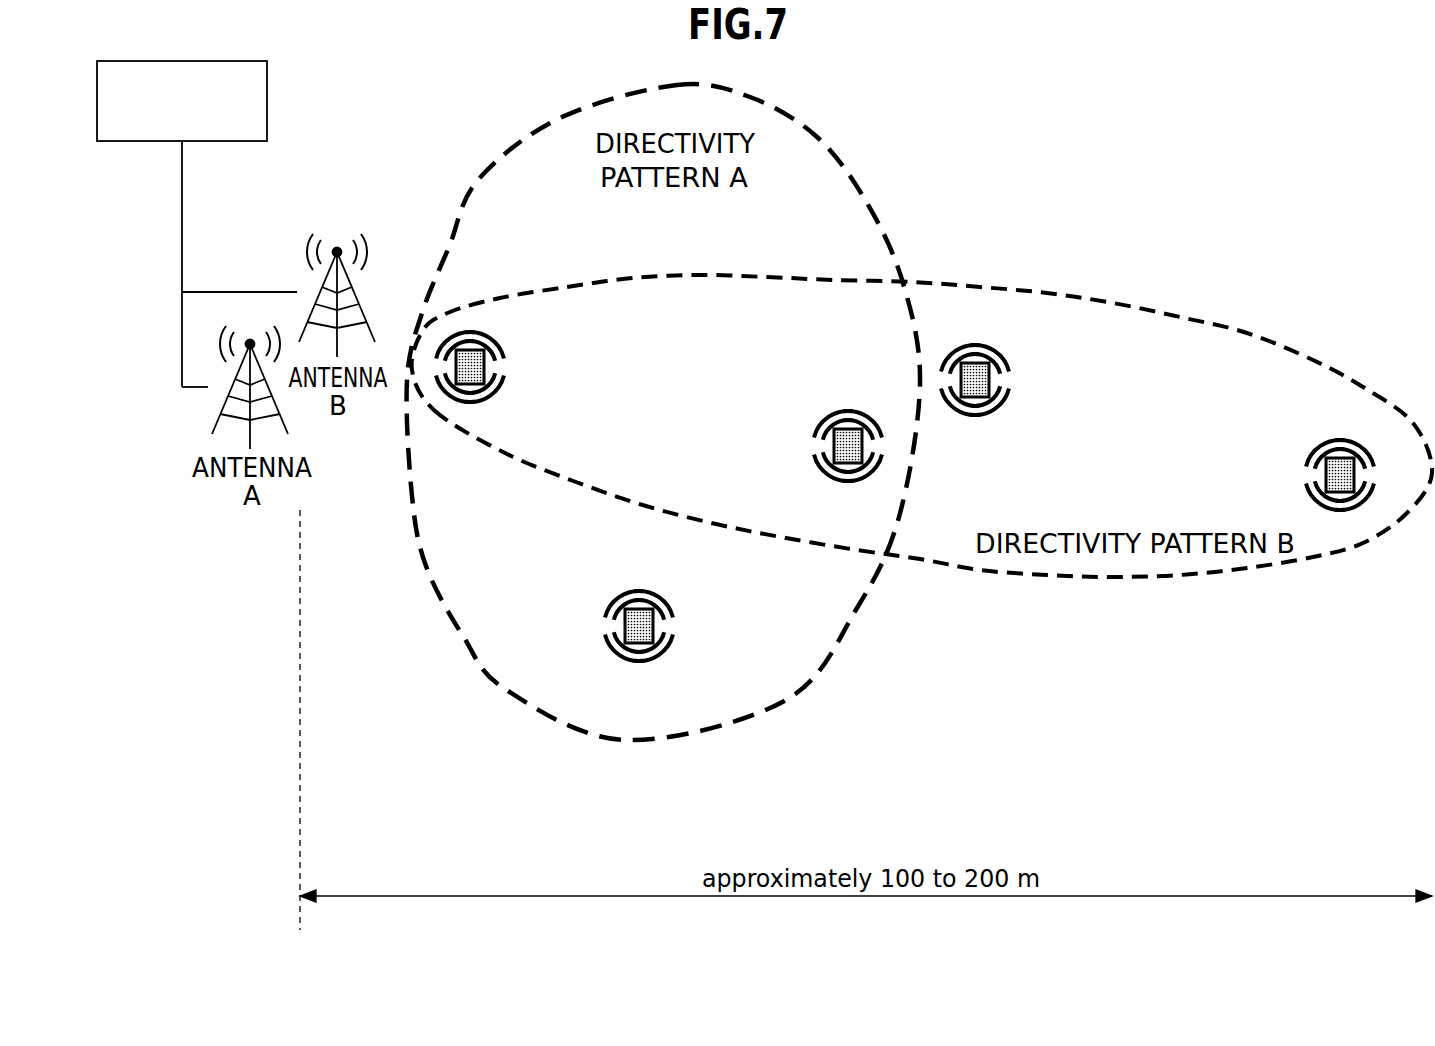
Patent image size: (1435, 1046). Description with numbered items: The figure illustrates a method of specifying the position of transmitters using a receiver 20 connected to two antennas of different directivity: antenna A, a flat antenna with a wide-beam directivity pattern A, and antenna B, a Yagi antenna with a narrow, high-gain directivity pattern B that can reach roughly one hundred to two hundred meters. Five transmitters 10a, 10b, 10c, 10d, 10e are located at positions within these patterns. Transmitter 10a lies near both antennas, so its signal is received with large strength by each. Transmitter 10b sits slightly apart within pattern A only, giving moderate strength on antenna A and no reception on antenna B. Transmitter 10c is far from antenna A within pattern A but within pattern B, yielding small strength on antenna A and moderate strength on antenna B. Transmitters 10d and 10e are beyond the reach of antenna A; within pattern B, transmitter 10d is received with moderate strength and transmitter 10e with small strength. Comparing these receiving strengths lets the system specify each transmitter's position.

The receiver 20 is at (214, 59).
The transmitter 10a is at (486, 367).
The transmitter 10b is at (655, 626).
The transmitter 10c is at (832, 446).
The transmitter 10d is at (991, 380).
The transmitter 10e is at (1324, 475).